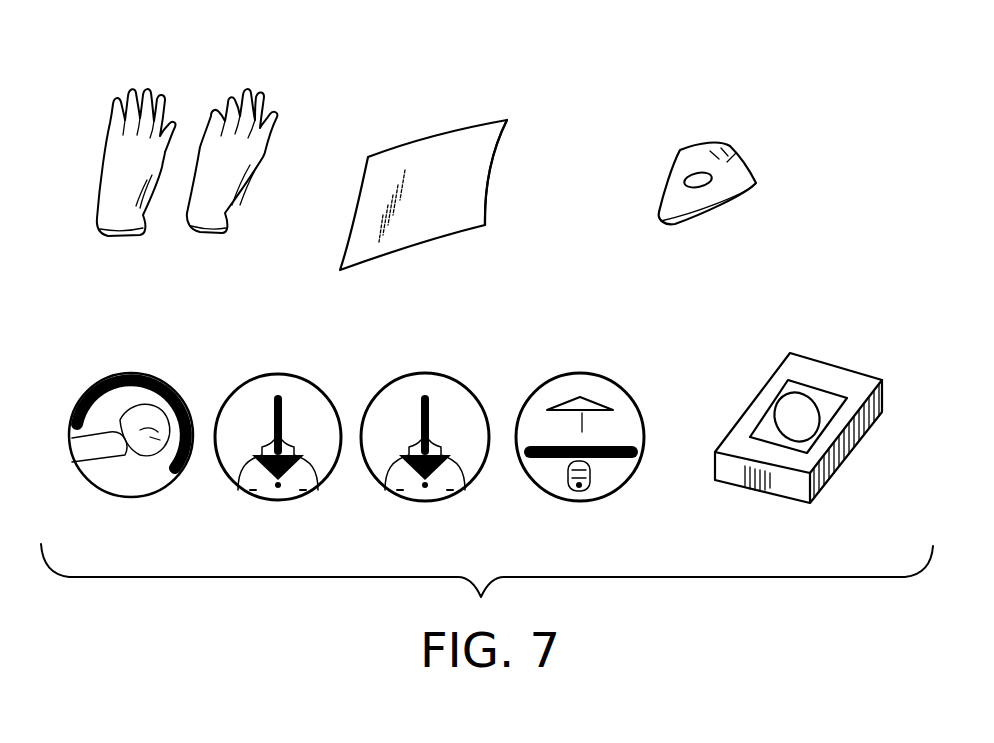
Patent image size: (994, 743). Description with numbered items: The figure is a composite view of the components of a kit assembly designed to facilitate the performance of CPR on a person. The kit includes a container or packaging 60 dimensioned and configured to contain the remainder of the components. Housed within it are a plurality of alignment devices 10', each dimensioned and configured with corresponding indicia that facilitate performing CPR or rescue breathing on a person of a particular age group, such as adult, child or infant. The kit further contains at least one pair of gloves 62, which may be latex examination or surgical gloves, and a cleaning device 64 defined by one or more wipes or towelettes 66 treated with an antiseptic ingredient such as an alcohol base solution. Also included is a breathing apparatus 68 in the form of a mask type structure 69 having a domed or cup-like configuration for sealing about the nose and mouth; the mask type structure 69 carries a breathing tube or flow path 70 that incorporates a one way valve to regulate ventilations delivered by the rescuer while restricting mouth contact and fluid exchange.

The alignment device 10' is at (335, 250).
The container or packaging 60 is at (845, 363).
The pair of gloves 62 is at (202, 95).
The cleaning device 64 is at (437, 127).
The towelette 66 is at (462, 163).
The breathing apparatus 68 is at (756, 142).
The mask type structure 69 is at (737, 178).
The breathing tube or flow path 70 is at (700, 183).